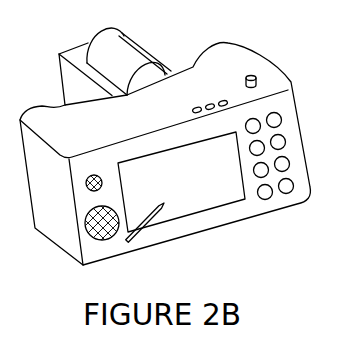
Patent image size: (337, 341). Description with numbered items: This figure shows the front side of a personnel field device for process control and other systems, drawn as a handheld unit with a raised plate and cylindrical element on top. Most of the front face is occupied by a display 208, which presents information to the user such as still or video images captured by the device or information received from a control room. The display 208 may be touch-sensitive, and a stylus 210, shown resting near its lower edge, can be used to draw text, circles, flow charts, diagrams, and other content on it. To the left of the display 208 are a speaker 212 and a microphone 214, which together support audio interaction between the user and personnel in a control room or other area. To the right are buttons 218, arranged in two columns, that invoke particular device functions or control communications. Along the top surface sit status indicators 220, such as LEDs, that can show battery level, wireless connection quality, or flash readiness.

The display 208 is at (143, 157).
The stylus 210 is at (137, 241).
The speaker 212 is at (96, 239).
The microphone 214 is at (91, 190).
The buttons 218 is at (270, 207).
The status indicators 220 is at (215, 100).